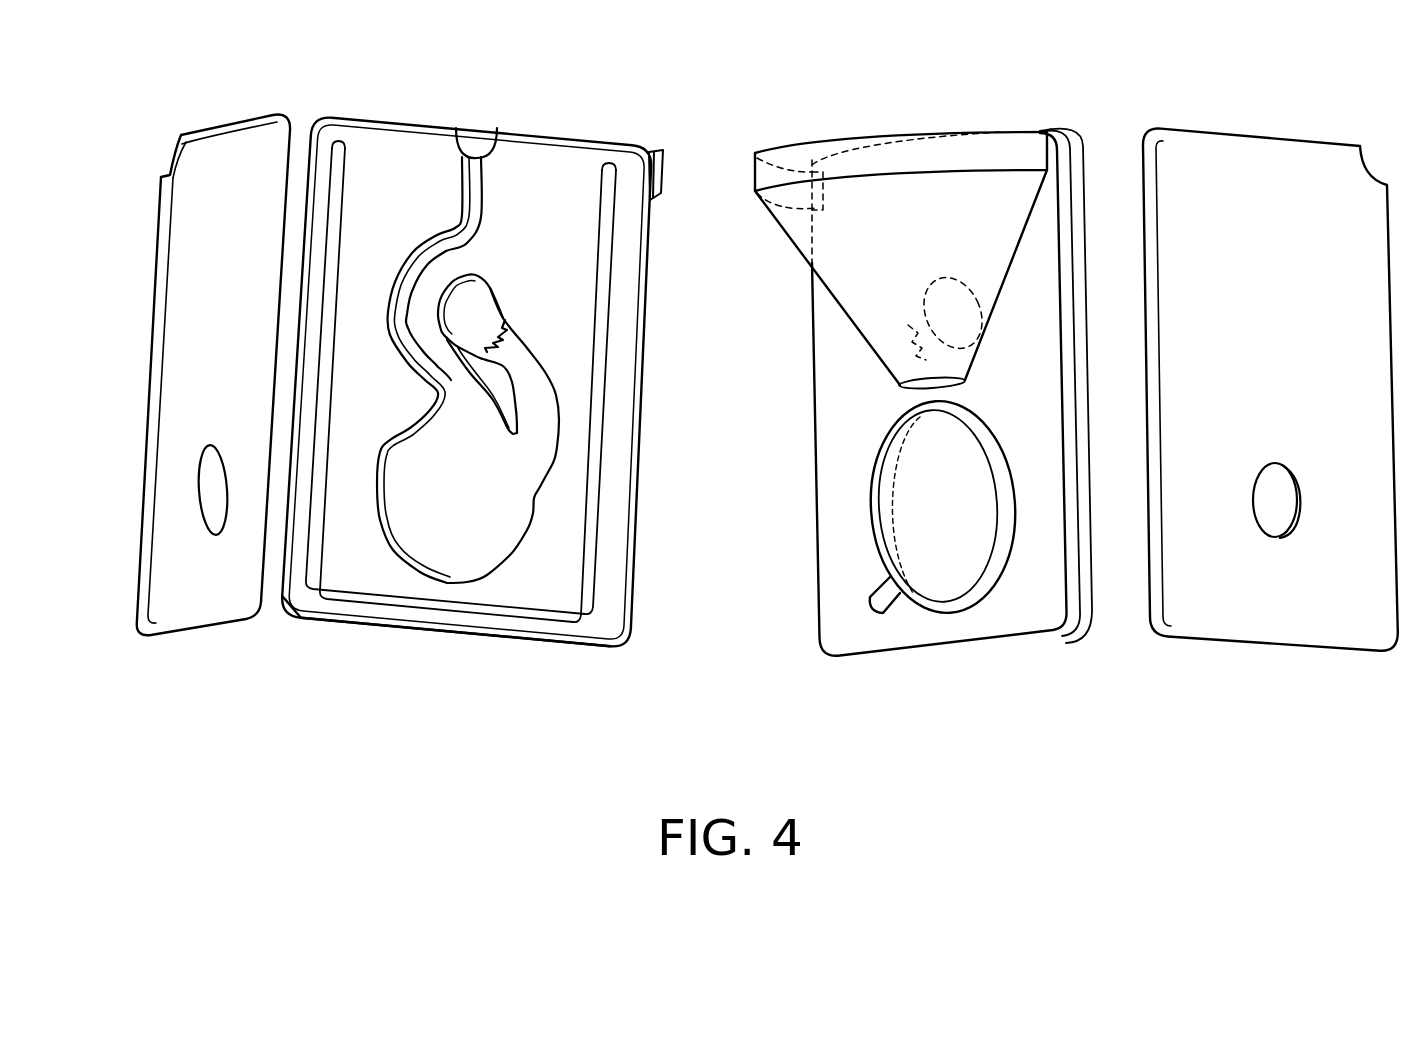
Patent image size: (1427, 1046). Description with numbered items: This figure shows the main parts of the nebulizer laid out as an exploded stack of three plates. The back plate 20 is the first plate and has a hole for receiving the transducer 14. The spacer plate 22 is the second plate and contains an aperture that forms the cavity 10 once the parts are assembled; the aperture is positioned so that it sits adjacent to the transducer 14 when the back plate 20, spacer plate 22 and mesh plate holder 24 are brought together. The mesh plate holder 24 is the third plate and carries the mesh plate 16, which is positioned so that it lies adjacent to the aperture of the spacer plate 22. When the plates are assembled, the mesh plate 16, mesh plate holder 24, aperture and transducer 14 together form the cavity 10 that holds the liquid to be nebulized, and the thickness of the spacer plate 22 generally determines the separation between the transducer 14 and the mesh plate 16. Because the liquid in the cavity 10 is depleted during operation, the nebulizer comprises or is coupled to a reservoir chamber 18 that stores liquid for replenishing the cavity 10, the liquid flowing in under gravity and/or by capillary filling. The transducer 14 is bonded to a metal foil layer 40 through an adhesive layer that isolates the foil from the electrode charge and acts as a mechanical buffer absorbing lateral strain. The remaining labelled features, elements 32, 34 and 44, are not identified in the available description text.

The cavity 10 is at (445, 527).
The transducer 14 is at (950, 570).
The mesh plate 16 is at (208, 487).
The reservoir chamber 18 is at (755, 164).
The back plate 20 is at (641, 350).
The spacer plate 22 is at (360, 573).
The mesh plate holder 24 is at (195, 617).
The head portion 32 is at (510, 348).
The channel 34 is at (438, 380).
The foil layer 40 is at (503, 527).
The base 44 is at (330, 620).